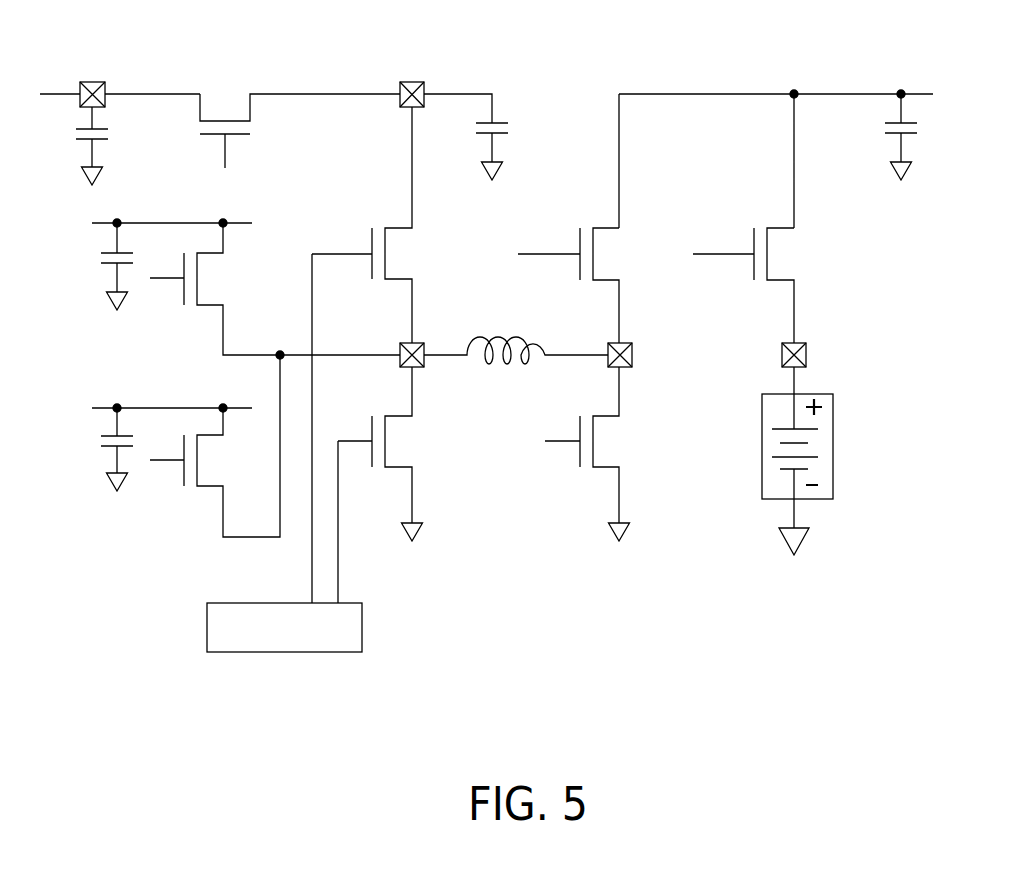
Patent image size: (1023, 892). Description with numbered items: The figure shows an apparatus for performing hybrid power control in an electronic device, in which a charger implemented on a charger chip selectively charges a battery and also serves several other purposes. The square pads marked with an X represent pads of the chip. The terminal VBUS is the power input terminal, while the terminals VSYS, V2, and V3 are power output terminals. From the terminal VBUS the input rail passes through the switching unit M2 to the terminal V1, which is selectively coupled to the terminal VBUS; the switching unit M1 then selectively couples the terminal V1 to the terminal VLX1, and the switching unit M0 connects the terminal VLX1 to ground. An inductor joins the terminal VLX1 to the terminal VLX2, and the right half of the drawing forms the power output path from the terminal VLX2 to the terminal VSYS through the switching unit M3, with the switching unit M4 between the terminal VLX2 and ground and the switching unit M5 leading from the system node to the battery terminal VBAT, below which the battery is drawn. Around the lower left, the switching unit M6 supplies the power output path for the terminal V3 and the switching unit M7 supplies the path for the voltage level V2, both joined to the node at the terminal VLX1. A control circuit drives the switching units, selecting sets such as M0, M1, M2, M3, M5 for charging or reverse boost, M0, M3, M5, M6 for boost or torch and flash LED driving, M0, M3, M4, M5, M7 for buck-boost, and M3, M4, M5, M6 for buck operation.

The terminal VBUS is at (120, 117).
The switching unit M2 is at (300, 124).
The terminal V1 is at (437, 124).
The terminal VSYS is at (814, 155).
The terminal V3 is at (172, 252).
The switching unit M6 is at (275, 291).
The terminal V2 is at (172, 435).
The switching unit M7 is at (215, 446).
The switching unit M1 is at (375, 225).
The terminal VLX1 is at (375, 347).
The switching unit M0 is at (388, 454).
The switching unit M3 is at (582, 285).
The terminal VLX2 is at (654, 347).
The switching unit M4 is at (595, 454).
The switching unit M5 is at (757, 285).
The terminal VBAT is at (821, 448).